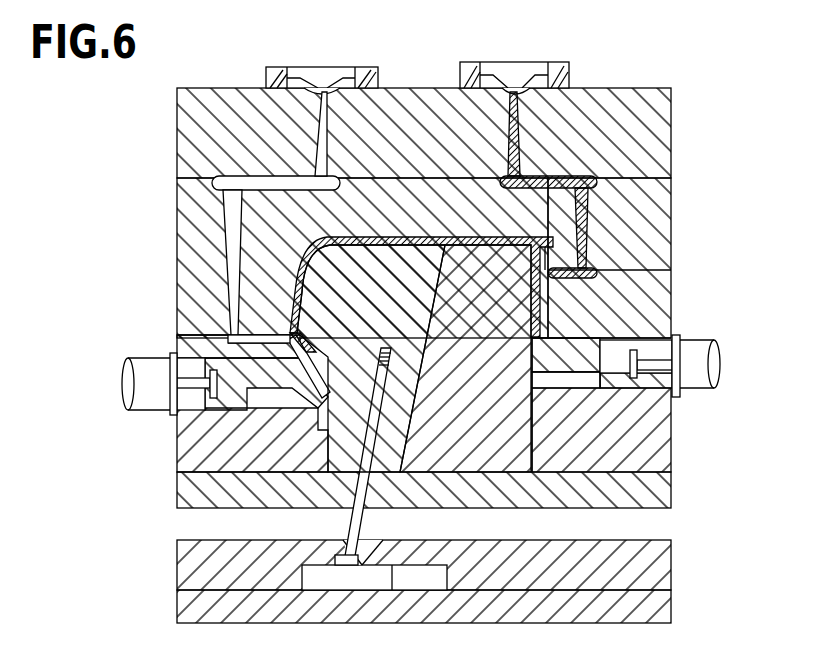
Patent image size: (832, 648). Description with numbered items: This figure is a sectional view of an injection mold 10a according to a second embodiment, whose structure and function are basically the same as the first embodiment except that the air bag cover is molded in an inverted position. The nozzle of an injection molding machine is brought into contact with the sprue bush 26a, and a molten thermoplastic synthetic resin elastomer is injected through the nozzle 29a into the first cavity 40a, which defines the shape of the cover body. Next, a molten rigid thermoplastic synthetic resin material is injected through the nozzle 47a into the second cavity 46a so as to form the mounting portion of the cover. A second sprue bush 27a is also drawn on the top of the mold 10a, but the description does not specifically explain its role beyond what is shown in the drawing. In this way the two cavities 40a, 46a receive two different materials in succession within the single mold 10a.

The injection mold 10a is at (700, 90).
The sprue bush 26a is at (563, 64).
The sprue bushing 27a is at (279, 66).
The nozzle 29a is at (588, 222).
The first cavity 40a is at (387, 237).
The second cavity 46a is at (548, 385).
The nozzle 47a is at (232, 278).